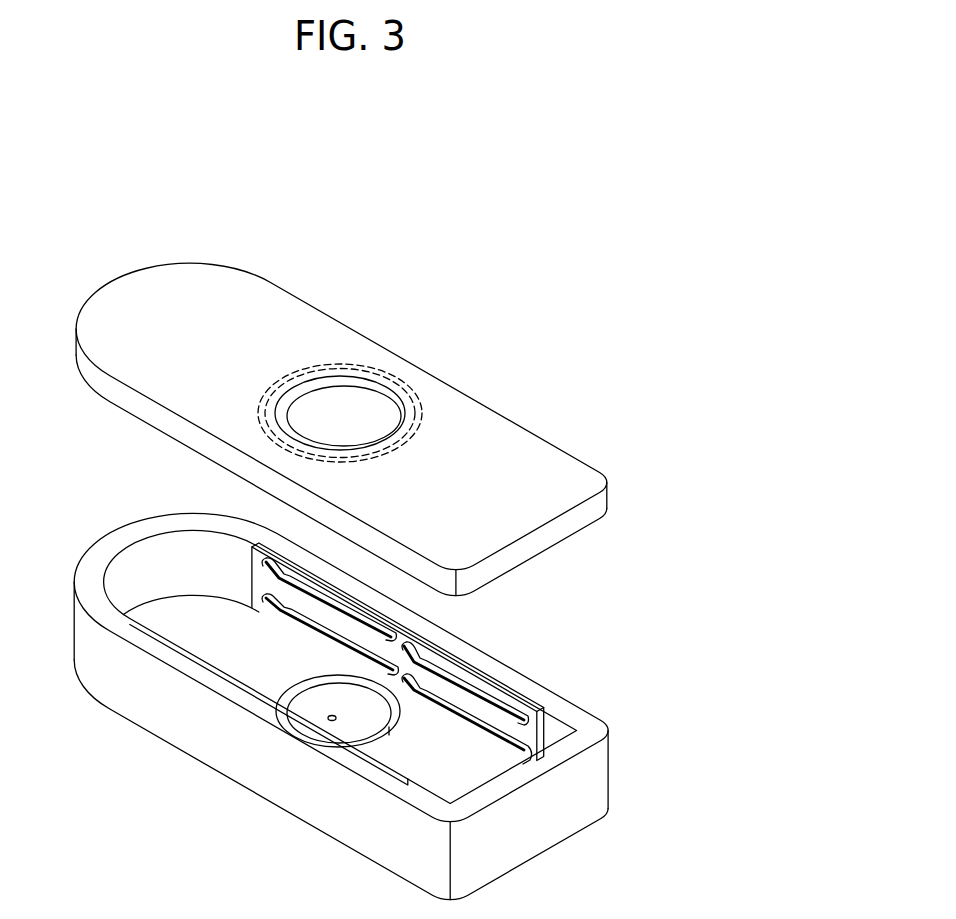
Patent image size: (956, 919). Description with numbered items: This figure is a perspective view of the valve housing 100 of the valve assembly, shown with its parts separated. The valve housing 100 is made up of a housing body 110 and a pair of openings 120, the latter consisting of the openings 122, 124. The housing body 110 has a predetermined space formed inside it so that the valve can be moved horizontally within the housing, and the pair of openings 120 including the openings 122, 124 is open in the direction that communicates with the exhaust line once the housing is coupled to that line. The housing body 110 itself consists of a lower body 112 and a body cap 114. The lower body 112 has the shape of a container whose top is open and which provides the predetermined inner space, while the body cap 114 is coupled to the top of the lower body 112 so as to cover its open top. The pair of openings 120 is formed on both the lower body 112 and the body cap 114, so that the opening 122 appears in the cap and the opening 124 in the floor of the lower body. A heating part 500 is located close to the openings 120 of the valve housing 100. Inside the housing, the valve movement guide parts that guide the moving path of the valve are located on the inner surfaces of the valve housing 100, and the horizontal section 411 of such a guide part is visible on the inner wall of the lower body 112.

The valve housing 100 is at (603, 237).
The housing body 110 is at (567, 282).
The lower body 112 is at (565, 713).
The body cap 114 is at (530, 445).
The pair of openings 120 is at (506, 282).
The opening 122 is at (347, 398).
The opening 124 is at (346, 703).
The heating part 500 is at (258, 413).
The horizontal section 411 is at (284, 610).